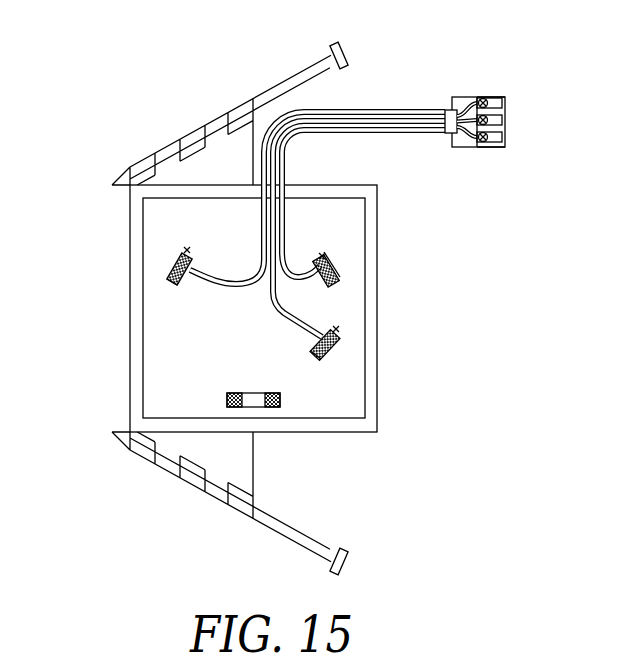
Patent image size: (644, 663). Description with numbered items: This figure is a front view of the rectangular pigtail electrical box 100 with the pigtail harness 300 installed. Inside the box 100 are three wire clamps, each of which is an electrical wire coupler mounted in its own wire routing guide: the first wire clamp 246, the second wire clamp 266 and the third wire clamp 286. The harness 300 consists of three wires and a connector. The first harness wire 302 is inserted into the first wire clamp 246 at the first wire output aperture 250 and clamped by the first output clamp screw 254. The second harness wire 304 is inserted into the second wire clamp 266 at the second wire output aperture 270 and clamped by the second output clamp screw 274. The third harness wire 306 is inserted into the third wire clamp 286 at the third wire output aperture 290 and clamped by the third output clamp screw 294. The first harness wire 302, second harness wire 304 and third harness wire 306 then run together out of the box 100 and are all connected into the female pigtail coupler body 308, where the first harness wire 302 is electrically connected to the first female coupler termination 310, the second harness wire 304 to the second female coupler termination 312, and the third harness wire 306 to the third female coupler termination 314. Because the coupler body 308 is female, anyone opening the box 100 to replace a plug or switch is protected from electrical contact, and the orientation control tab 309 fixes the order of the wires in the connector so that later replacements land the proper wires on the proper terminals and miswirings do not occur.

The pigtail electrical box 100 is at (117, 150).
The first wire clamp 246 is at (187, 249).
The first wire output aperture 250 is at (178, 288).
The first output clamp screw 254 is at (167, 273).
The second wire clamp 266 is at (340, 325).
The second wire output aperture 270 is at (315, 343).
The second output clamp screw 274 is at (334, 342).
The third wire clamp 286 is at (333, 274).
The third wire output aperture 290 is at (324, 256).
The third output clamp screw 294 is at (343, 266).
The pigtail harness 300 is at (424, 65).
The first harness wire 302 is at (214, 268).
The second harness wire 304 is at (297, 322).
The third harness wire 306 is at (290, 262).
The female pigtail coupler body 308 is at (497, 89).
The orientation control tab 309 is at (506, 105).
The first female coupler termination 310 is at (506, 107).
The second female coupler termination 312 is at (506, 123).
The third female coupler termination 314 is at (506, 144).